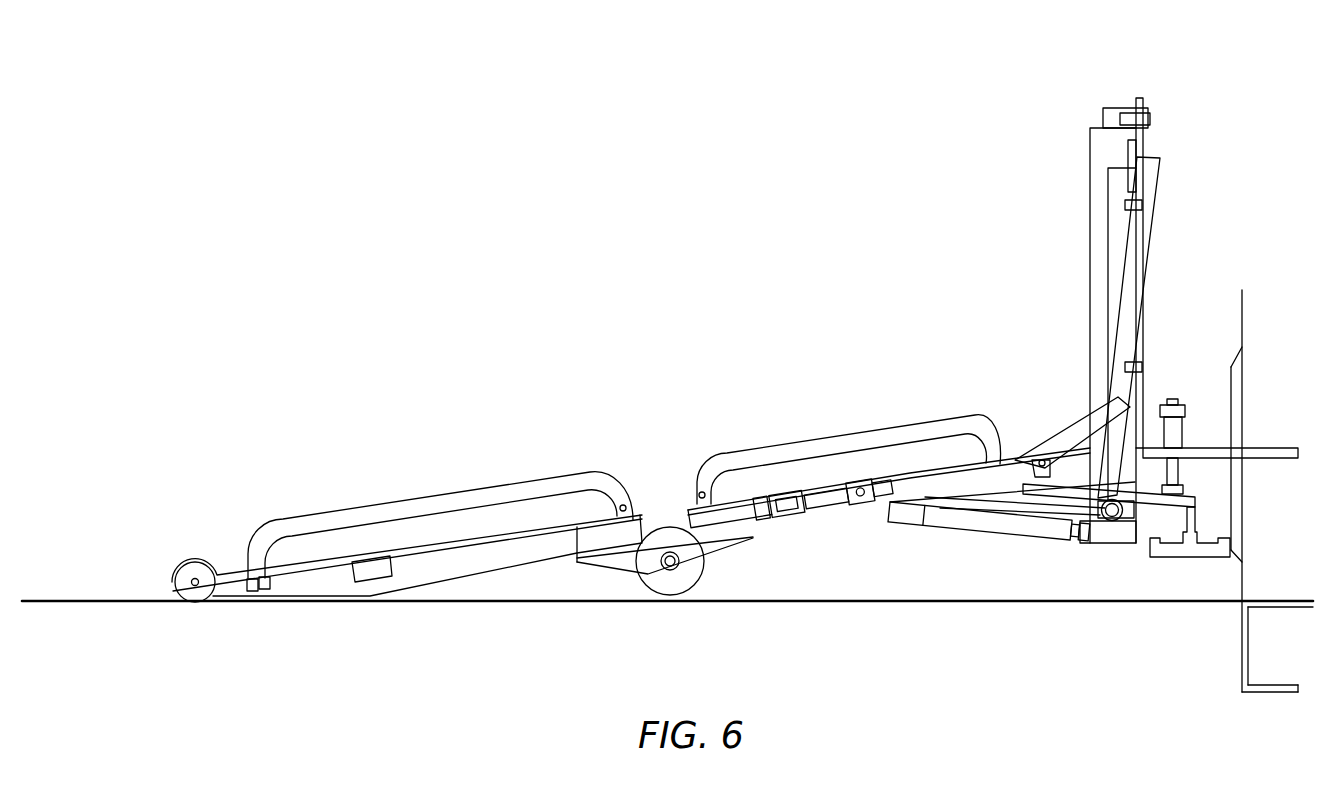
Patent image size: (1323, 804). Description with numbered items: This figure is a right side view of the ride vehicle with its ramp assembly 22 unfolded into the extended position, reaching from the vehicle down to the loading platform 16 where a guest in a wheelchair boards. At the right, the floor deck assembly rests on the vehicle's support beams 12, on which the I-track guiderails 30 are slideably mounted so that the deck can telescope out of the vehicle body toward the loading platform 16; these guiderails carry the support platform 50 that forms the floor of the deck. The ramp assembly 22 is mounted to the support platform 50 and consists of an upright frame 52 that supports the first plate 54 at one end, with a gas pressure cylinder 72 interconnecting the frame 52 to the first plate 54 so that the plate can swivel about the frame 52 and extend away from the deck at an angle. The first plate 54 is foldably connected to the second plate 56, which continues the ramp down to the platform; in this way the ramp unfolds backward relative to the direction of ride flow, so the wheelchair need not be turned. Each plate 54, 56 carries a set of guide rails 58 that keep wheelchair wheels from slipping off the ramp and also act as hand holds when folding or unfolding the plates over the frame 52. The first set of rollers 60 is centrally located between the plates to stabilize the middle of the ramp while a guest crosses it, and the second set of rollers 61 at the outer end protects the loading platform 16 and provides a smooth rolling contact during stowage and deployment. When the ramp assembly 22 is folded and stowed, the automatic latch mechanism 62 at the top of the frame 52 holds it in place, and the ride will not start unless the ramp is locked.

The support beam 12 is at (1238, 685).
The loading platform 16 is at (33, 603).
The ramp assembly 22 is at (415, 316).
The I-track guiderail 30 is at (1168, 552).
The support platform 50 is at (1283, 445).
The frame 52 is at (1138, 292).
The first plate 54 is at (852, 490).
The second plate 56 is at (400, 548).
The guide rails 58 is at (590, 487).
The first set of rollers 60 is at (663, 570).
The second set of rollers 61 is at (185, 594).
The automatic latch mechanism 62 is at (1148, 108).
The gas pressure cylinder 72 is at (982, 525).